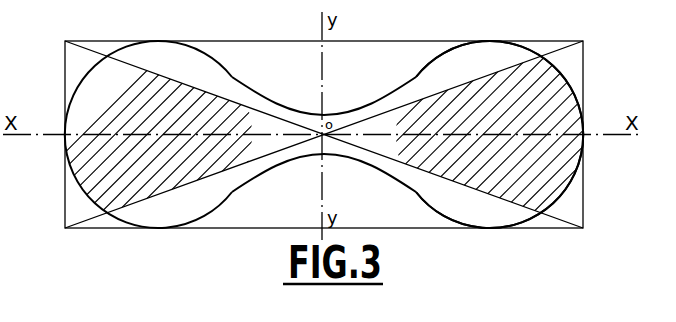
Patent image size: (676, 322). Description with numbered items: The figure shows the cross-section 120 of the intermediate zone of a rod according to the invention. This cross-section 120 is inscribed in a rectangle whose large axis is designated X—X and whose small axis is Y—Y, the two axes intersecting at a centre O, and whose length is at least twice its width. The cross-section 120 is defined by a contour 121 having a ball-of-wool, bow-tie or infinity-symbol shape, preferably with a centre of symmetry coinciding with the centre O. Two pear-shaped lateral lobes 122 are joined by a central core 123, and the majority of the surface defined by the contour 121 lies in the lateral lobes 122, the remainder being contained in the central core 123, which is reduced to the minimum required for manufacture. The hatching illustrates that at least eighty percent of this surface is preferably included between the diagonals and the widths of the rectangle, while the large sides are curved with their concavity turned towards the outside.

The cross-section 120 is at (224, 54).
The contour 121 is at (530, 50).
The lateral lobes 122 is at (181, 200).
The central core 123 is at (300, 153).